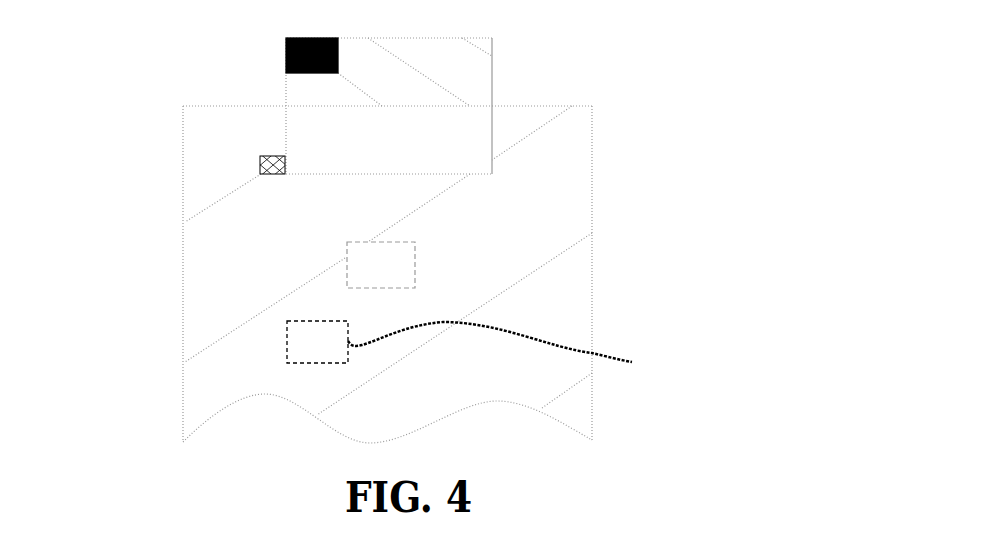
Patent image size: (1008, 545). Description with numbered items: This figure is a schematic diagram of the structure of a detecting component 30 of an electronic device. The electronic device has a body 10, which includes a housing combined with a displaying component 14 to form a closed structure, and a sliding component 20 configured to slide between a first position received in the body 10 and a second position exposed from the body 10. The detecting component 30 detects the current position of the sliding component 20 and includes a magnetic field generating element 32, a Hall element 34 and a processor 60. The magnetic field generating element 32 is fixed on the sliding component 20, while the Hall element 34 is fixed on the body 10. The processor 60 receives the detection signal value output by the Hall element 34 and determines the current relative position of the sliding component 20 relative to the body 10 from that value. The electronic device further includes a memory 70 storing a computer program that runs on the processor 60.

The body 10 is at (225, 268).
The displaying component 14 is at (593, 205).
The sliding component 20 is at (420, 72).
The detecting component 30 is at (132, 30).
The magnetic field generating element 32 is at (288, 38).
The Hall element 34 is at (261, 157).
The processor 60 is at (373, 263).
The memory 70 is at (488, 348).